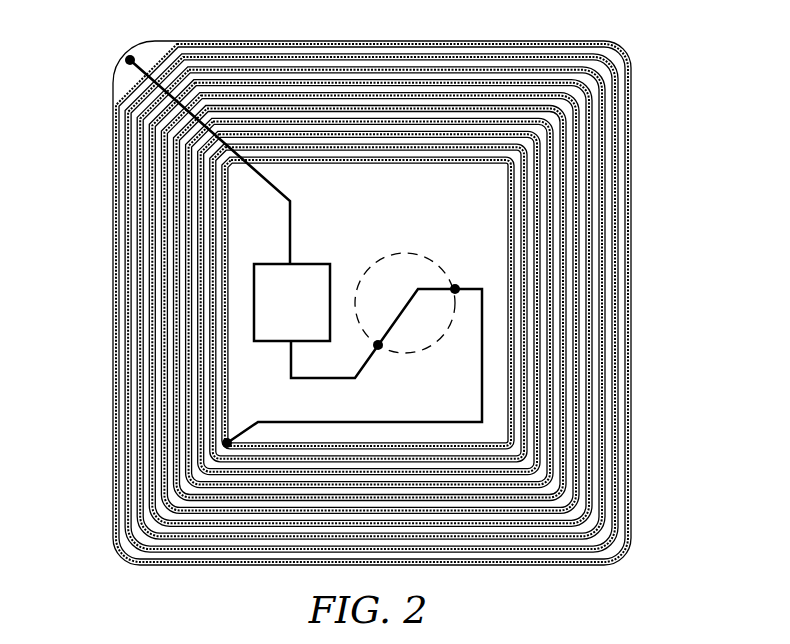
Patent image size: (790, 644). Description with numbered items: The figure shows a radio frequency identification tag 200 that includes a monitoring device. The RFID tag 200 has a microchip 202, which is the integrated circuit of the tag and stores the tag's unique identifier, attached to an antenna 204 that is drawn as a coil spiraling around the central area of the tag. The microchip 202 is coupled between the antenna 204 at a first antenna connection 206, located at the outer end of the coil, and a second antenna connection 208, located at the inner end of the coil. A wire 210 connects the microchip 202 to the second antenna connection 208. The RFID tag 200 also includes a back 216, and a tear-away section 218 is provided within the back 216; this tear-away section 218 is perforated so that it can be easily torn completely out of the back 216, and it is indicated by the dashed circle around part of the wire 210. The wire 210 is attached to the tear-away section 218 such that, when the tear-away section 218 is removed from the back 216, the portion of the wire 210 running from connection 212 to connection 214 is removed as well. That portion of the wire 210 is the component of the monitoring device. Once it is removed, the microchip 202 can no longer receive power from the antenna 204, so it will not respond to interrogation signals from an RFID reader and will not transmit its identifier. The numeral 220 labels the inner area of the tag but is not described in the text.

The radio frequency identification (RFID) tag 200 is at (673, 457).
The microchip 202 is at (307, 308).
The antenna 204 is at (104, 328).
The first antenna connection 206 is at (117, 54).
The second antenna connection 208 is at (224, 428).
The wire 210 is at (463, 333).
The connection 212 is at (371, 342).
The connection 214 is at (448, 276).
The back 216 is at (486, 186).
The tear-away section 218 is at (397, 242).
The inner area of substrate 220 is at (357, 215).